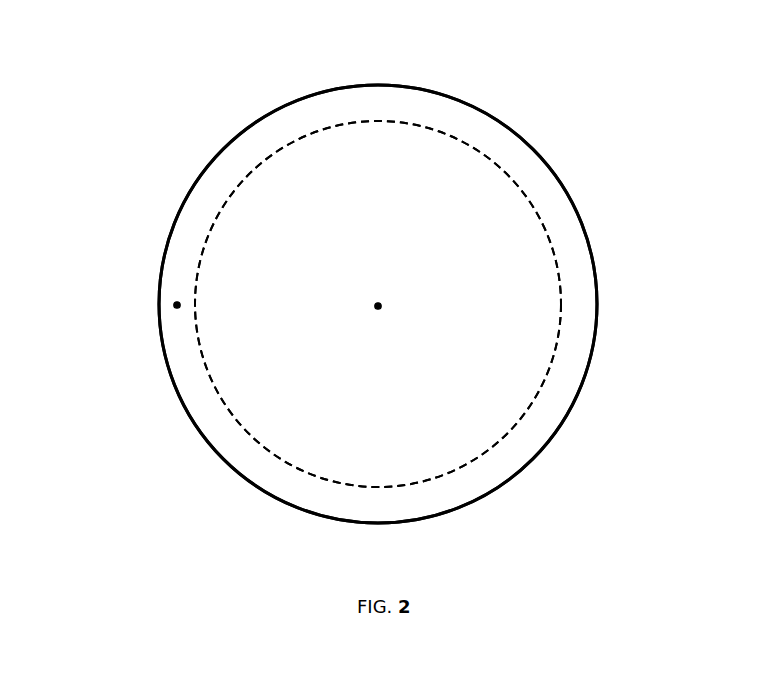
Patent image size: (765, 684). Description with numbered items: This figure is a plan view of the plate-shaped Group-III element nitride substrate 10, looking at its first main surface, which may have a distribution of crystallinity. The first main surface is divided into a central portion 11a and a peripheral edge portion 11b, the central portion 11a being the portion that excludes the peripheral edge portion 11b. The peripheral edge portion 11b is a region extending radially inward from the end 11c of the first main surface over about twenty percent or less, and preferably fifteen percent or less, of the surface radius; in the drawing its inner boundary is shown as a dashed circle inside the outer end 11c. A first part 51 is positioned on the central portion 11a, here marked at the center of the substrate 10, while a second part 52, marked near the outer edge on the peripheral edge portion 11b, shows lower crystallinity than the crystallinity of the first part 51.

The Group-III element nitride substrate 10 is at (508, 73).
The central portion 11a is at (463, 397).
The peripheral edge portion 11b is at (570, 367).
The end 11c is at (598, 300).
The first part 51 is at (378, 306).
The second part 52 is at (177, 305).